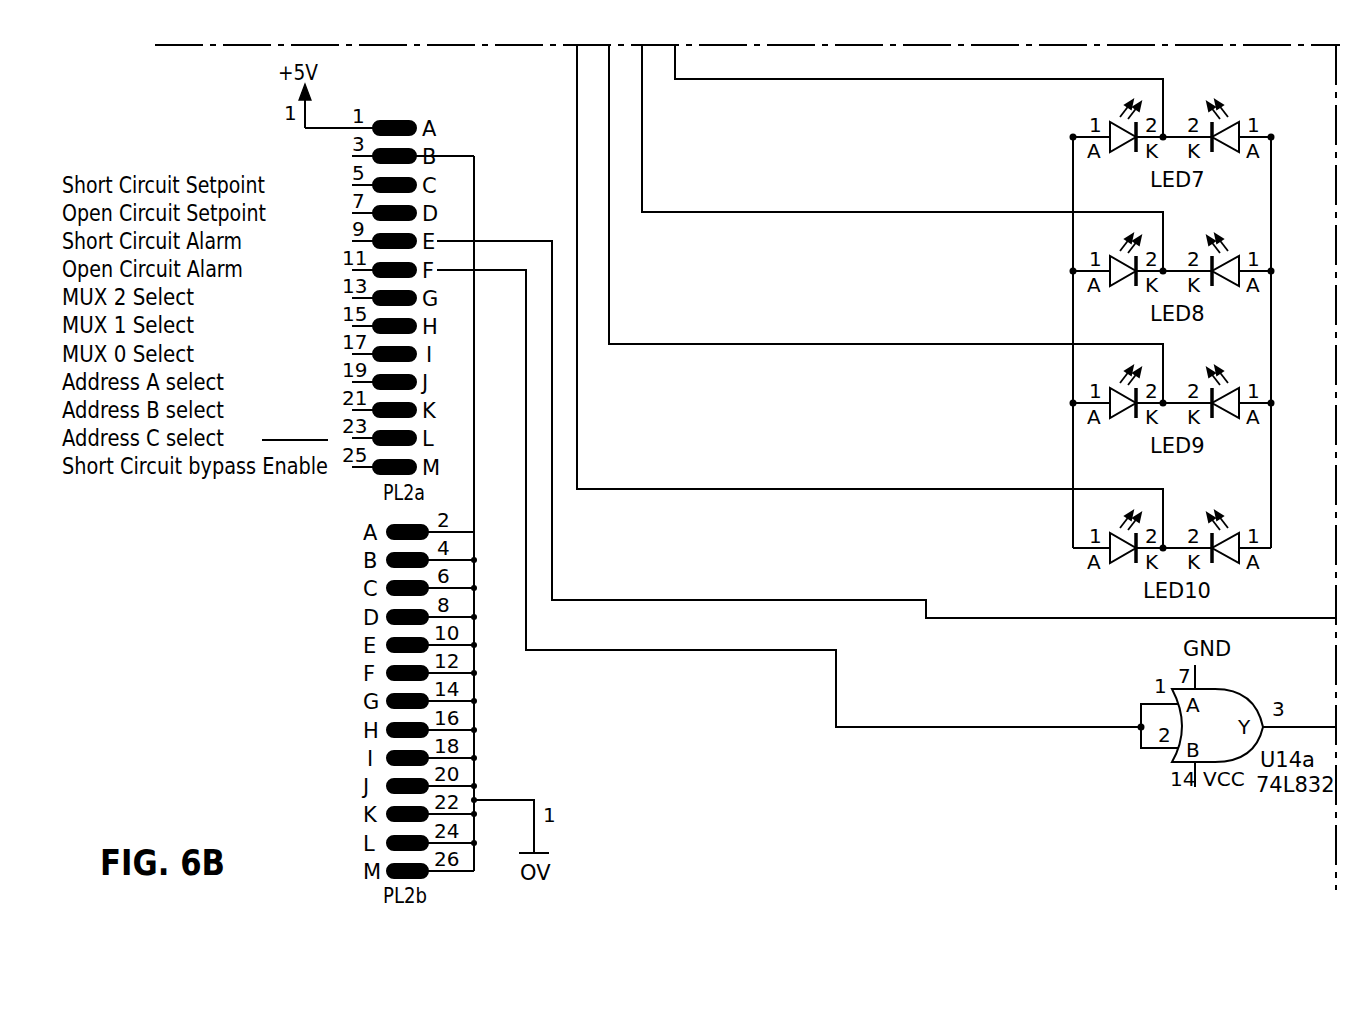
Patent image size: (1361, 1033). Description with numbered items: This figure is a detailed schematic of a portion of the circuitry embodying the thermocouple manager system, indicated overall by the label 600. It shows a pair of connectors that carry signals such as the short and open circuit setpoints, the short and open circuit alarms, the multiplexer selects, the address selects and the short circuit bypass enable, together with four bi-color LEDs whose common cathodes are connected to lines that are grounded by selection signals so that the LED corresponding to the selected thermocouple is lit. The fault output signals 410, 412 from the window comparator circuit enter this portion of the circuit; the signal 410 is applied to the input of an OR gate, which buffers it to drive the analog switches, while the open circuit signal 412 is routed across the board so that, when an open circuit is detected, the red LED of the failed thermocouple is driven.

The output signal 410 is at (985, 728).
The open circuit signal 412 is at (990, 618).
The indicator/connector circuit 600 is at (877, 837).